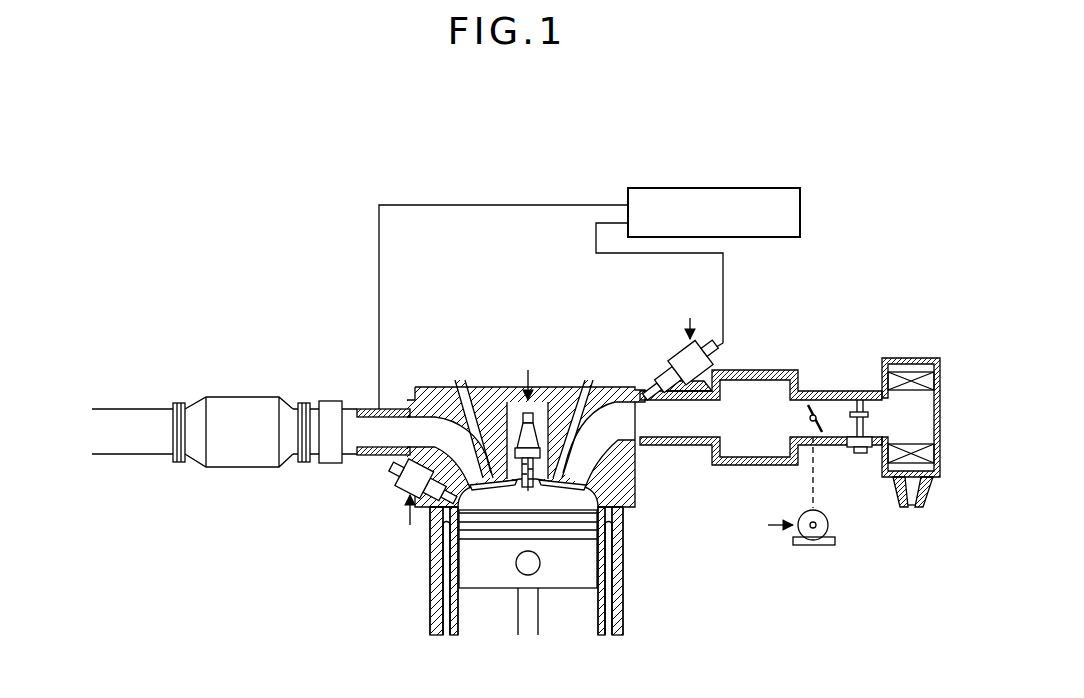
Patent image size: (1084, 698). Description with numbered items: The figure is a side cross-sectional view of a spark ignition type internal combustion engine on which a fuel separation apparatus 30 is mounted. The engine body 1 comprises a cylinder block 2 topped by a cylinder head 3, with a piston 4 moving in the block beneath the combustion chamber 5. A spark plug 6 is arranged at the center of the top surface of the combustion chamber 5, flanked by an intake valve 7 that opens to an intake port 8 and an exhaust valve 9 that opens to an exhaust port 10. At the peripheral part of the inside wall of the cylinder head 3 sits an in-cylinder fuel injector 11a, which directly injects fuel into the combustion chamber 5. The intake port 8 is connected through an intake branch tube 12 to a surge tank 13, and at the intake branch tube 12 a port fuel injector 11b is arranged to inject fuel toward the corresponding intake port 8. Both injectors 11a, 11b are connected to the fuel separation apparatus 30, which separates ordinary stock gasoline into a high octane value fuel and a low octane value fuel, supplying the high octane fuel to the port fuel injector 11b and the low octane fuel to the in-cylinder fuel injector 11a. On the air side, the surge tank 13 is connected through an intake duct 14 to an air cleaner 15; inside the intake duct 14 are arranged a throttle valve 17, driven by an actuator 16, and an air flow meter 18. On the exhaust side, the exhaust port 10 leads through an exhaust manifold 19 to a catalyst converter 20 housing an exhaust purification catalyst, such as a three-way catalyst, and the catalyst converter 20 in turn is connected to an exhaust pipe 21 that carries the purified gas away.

The engine body 1 is at (646, 535).
The cylinder block 2 is at (618, 617).
The cylinder head 3 is at (637, 503).
The piston 4 is at (473, 556).
The combustion chamber 5 is at (505, 502).
The spark plug 6 is at (519, 430).
The intake valve 7 is at (628, 492).
The intake port 8 is at (648, 453).
The exhaust valve 9 is at (465, 395).
The exhaust port 10 is at (440, 430).
The in-cylinder fuel injector 11a is at (407, 487).
The port fuel injector 11b is at (677, 362).
The intake branch tube 12 is at (707, 386).
The surge tank 13 is at (784, 370).
The intake duct 14 is at (843, 391).
The air cleaner 15 is at (922, 358).
The actuator 16 is at (802, 512).
The throttle valve 17 is at (826, 428).
The air flow meter 18 is at (860, 393).
The exhaust manifold 19 is at (400, 408).
The catalyst converter 20 is at (240, 397).
The exhaust pipe 21 is at (132, 439).
The fuel separation apparatus 30 is at (728, 188).